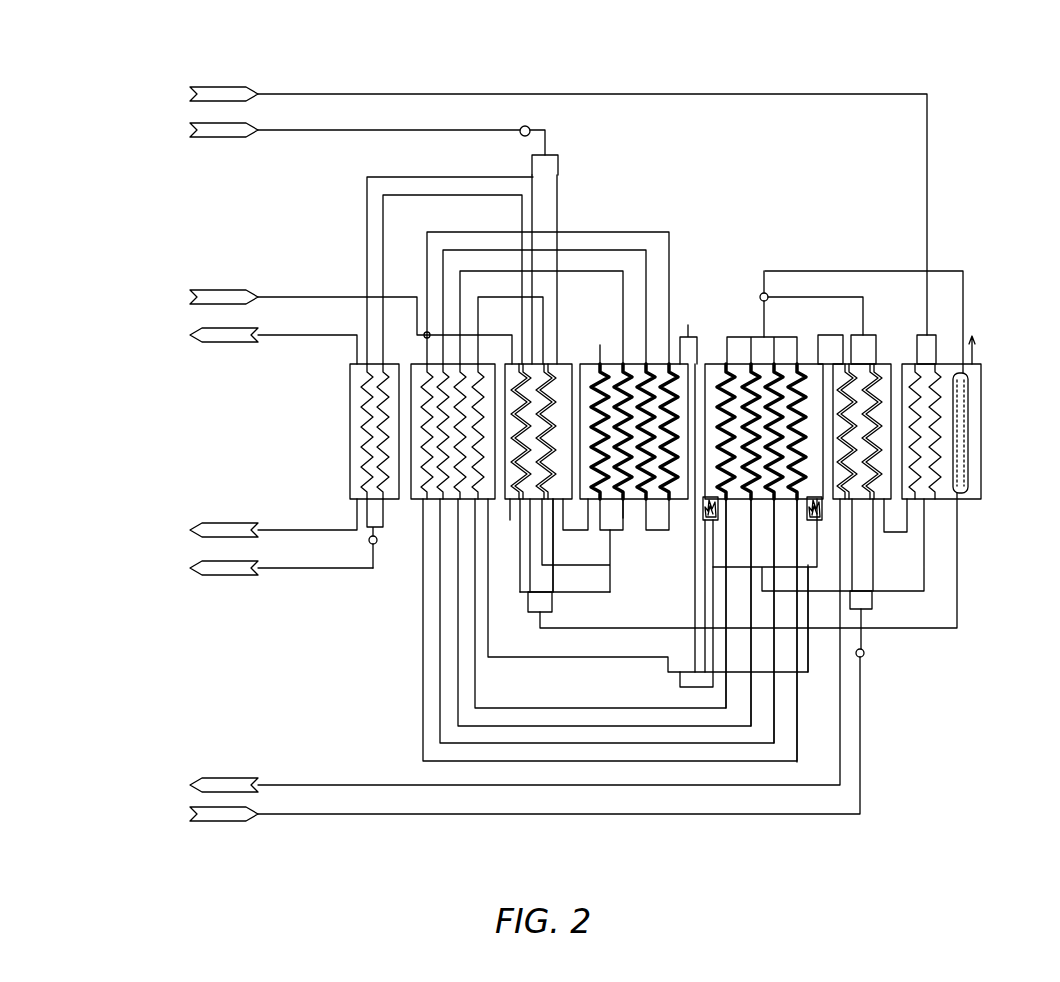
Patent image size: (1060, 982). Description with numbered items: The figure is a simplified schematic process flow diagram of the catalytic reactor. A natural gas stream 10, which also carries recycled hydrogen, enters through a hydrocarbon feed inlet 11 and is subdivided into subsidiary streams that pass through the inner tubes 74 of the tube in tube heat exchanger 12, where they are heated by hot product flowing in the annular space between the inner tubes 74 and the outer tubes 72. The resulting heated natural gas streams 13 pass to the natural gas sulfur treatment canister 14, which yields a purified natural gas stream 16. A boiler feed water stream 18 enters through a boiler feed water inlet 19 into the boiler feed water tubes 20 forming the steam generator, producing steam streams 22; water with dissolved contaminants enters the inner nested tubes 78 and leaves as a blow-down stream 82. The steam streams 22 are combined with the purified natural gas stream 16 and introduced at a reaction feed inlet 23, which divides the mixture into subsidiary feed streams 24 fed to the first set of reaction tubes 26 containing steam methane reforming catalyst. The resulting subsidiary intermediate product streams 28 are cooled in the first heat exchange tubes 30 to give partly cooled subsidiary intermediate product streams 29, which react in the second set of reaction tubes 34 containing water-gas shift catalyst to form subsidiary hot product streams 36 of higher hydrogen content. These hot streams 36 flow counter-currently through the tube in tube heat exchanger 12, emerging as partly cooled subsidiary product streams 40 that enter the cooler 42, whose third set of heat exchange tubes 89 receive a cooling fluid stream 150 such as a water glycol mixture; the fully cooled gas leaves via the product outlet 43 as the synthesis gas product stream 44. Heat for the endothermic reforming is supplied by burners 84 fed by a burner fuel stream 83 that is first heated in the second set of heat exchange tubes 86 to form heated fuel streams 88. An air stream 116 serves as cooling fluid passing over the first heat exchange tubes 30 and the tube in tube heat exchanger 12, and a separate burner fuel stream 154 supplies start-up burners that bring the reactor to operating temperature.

The natural gas stream 10 is at (323, 130).
The hydrocarbon feed inlet 11 is at (530, 124).
The tube in tube heat exchanger 12 is at (588, 344).
The heated natural gas streams 13 is at (556, 582).
The natural gas sulfur treatment canister 14 is at (977, 423).
The purified natural gas stream 16 is at (955, 272).
The boiler feed water stream 18 is at (380, 814).
The boiler feed water inlet 19 is at (866, 658).
The boiler feed water tubes 20 is at (878, 366).
The steam streams 22 is at (868, 335).
The reaction feed inlet 23 is at (762, 292).
The subsidiary feed streams 24 is at (797, 337).
The first set of reaction tubes 26 is at (805, 364).
The subsidiary intermediate product streams 28 is at (725, 703).
The partly cooled subsidiary intermediate product streams 29 is at (505, 290).
The first heat exchange tubes 30 is at (477, 492).
The second set of reaction tubes 34 is at (607, 363).
The subsidiary hot product streams 36 is at (612, 518).
The partly cooled subsidiary product streams 40 is at (527, 210).
The cooler 42 is at (345, 462).
The product outlet 43 is at (372, 576).
The synthesis gas product stream 44 is at (290, 568).
The outer tube 72 is at (528, 382).
The inner tube 74 is at (532, 462).
The inner nested tubes 78 is at (905, 348).
The blow-down stream 82 is at (330, 785).
The burner fuel stream 83 is at (872, 94).
The burners 84 is at (712, 522).
The second set of heat exchange tubes 86 is at (930, 503).
The heated fuel streams 88 is at (900, 593).
The third set of heat exchange tubes 89 is at (366, 434).
The air stream 116 is at (292, 297).
The cooling fluid stream 150 is at (330, 530).
The burner fuel stream 154 is at (300, 335).